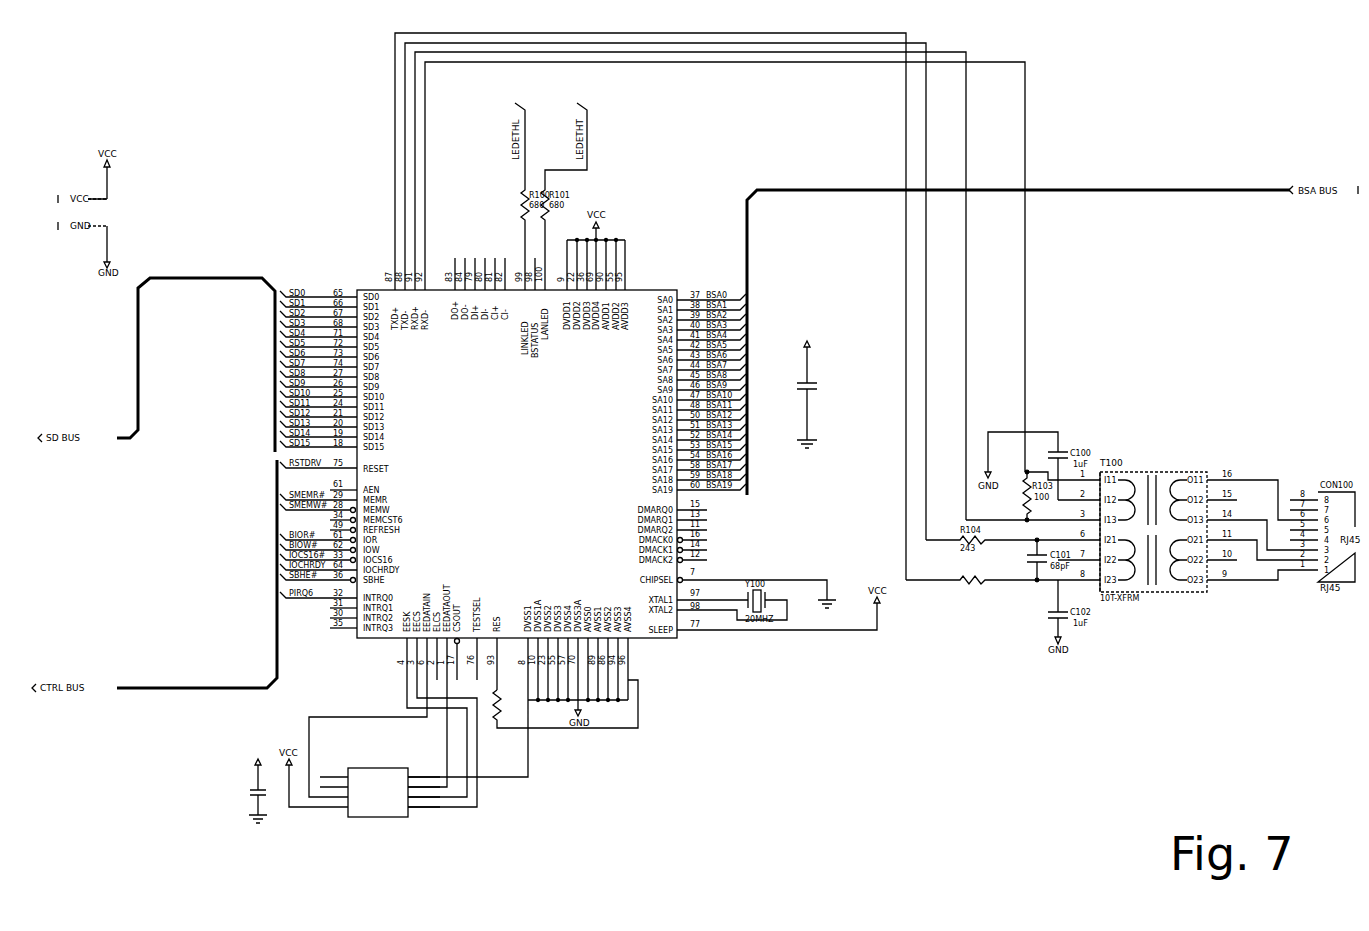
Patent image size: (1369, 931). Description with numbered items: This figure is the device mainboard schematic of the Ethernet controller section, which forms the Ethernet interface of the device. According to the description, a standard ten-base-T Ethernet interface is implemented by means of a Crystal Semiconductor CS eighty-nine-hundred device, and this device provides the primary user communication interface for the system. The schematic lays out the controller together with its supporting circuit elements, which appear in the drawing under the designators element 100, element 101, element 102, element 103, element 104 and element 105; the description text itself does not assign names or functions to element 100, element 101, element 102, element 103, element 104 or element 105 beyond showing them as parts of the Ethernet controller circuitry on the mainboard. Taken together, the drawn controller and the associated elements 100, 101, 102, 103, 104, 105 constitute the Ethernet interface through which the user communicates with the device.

The CS8900 ethernet controller U100 100 is at (690, 292).
The 93C46 EEPROM U101 101 is at (362, 768).
The resistor R102 102 is at (499, 692).
The capacitor C103 103 is at (266, 791).
The capacitor C104 104 is at (818, 386).
The resistor R105 105 is at (968, 577).